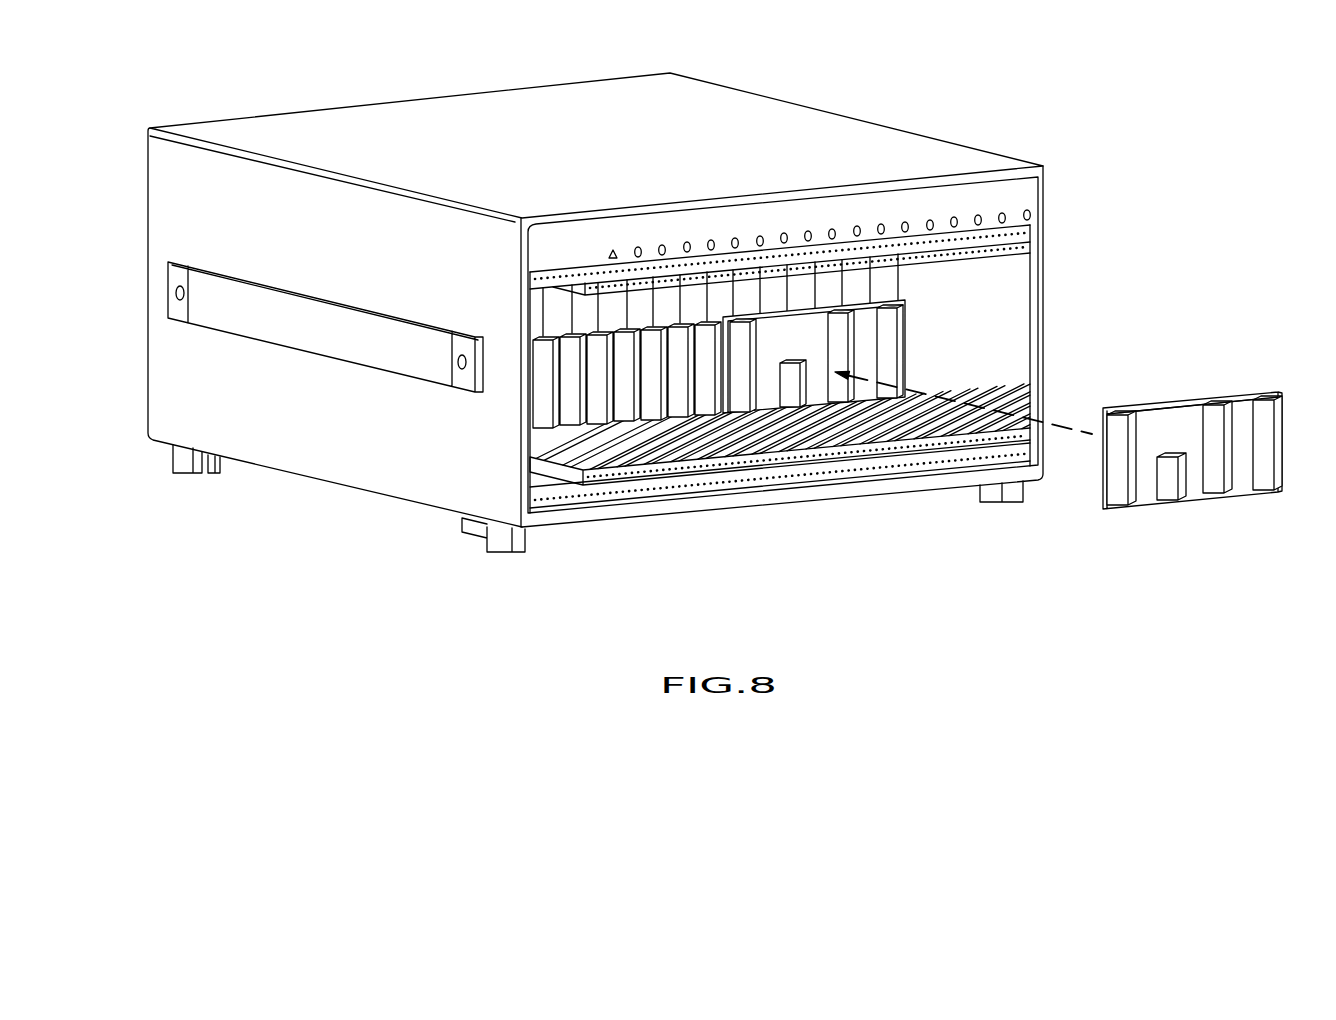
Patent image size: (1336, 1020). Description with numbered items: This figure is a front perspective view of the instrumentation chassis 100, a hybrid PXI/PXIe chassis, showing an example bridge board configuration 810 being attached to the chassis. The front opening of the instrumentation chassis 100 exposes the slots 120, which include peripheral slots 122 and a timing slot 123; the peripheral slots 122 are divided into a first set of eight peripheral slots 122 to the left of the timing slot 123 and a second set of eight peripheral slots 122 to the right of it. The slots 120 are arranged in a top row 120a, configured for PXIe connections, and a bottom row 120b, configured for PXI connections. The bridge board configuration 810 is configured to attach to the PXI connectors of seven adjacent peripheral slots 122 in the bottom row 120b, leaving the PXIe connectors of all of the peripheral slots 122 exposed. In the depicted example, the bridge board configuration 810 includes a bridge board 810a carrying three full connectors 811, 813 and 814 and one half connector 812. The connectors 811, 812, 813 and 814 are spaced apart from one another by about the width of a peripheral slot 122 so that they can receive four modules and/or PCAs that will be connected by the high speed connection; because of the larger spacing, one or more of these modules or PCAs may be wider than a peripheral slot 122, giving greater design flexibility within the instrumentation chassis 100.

The instrumentation chassis 100 is at (483, 71).
The slots 120 is at (898, 217).
The top row 120a is at (913, 282).
The bottom row 120b is at (925, 347).
The peripheral slots 122 is at (680, 425).
The timing slot 123 is at (727, 423).
The bridge board configuration 810 is at (1173, 449).
The bridge board 810a is at (1248, 395).
The full connector 811 is at (1122, 490).
The half connector 812 is at (1168, 487).
The full connector 813 is at (1222, 483).
The full connector 814 is at (1273, 478).